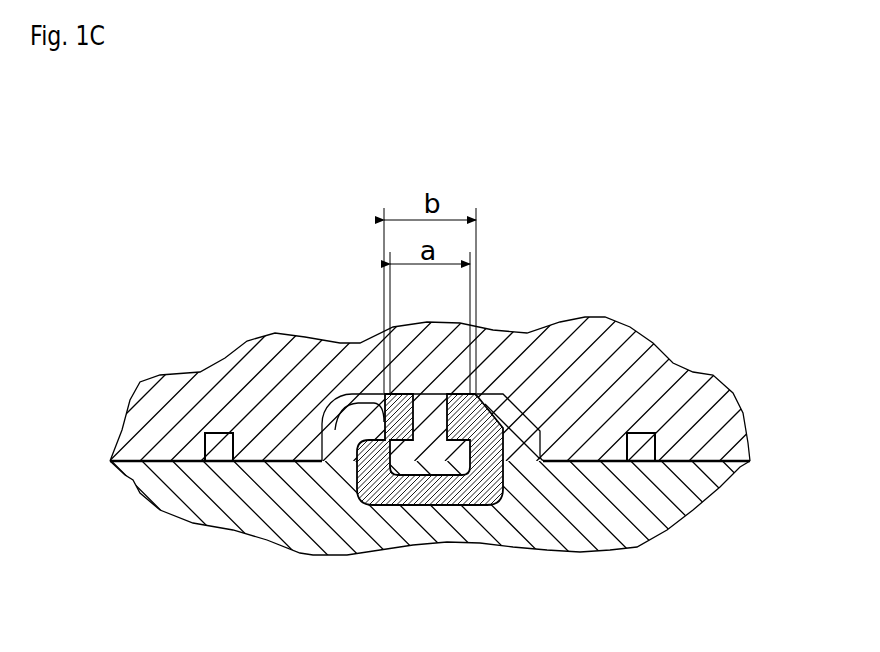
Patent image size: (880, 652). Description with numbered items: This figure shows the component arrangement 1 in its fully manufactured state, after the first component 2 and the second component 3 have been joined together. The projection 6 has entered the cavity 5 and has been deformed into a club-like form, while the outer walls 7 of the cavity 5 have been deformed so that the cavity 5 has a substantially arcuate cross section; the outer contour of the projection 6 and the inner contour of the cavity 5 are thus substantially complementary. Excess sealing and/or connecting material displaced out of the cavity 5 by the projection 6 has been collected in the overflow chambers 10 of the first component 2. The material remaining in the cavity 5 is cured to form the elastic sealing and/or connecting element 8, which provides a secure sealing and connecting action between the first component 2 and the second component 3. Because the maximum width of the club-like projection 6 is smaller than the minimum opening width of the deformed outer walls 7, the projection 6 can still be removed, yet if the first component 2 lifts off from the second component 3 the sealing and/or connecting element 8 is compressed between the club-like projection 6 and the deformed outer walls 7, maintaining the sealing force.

The component arrangement 1 is at (735, 290).
The first component 2 is at (547, 357).
The second component 3 is at (572, 508).
The cavity 5 is at (492, 421).
The projection 6 is at (443, 455).
The outer wall 7 is at (353, 420).
The sealing/connecting element 8 is at (414, 480).
The overflow chamber 10 is at (215, 432).